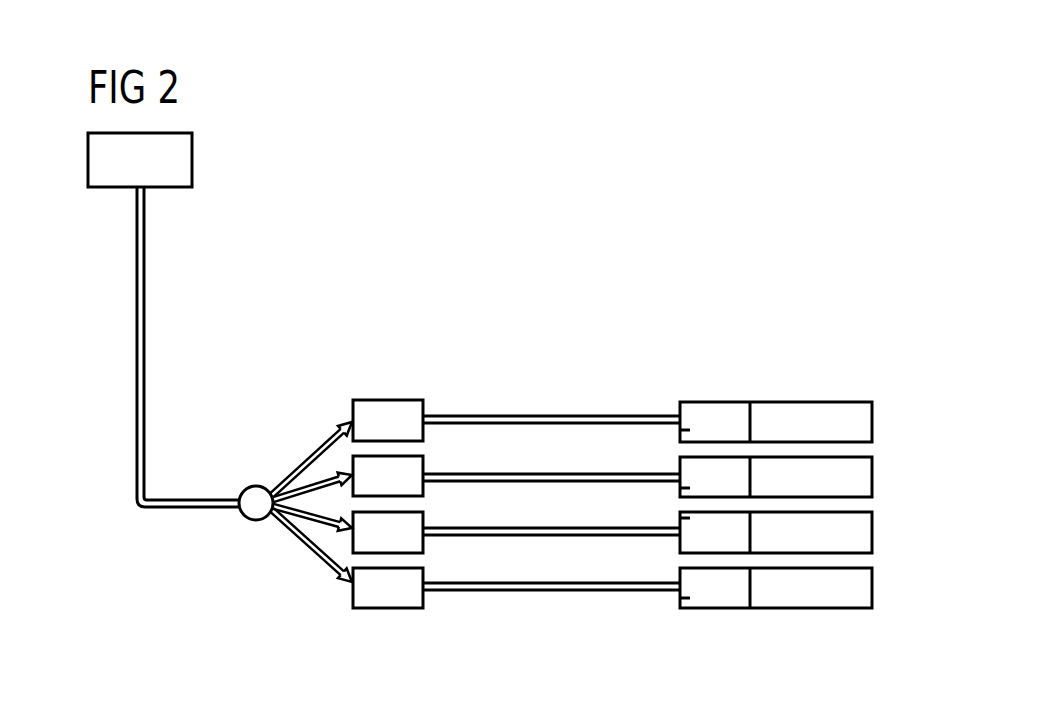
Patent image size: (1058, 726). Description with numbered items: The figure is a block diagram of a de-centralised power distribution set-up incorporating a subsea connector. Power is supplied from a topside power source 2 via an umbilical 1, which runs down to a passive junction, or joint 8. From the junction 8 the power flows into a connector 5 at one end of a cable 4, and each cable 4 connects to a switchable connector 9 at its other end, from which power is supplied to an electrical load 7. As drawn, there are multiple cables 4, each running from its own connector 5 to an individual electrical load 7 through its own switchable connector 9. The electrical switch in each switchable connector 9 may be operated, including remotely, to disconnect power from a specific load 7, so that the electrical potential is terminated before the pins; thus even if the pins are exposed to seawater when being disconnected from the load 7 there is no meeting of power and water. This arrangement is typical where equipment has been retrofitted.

The umbilical 1 is at (137, 340).
The topside power source 2 is at (195, 158).
The cable 4 is at (553, 415).
The connector 5 is at (418, 432).
The electrical load 7 is at (865, 418).
The passive junction 8 is at (257, 487).
The switchable connector 9 is at (684, 430).